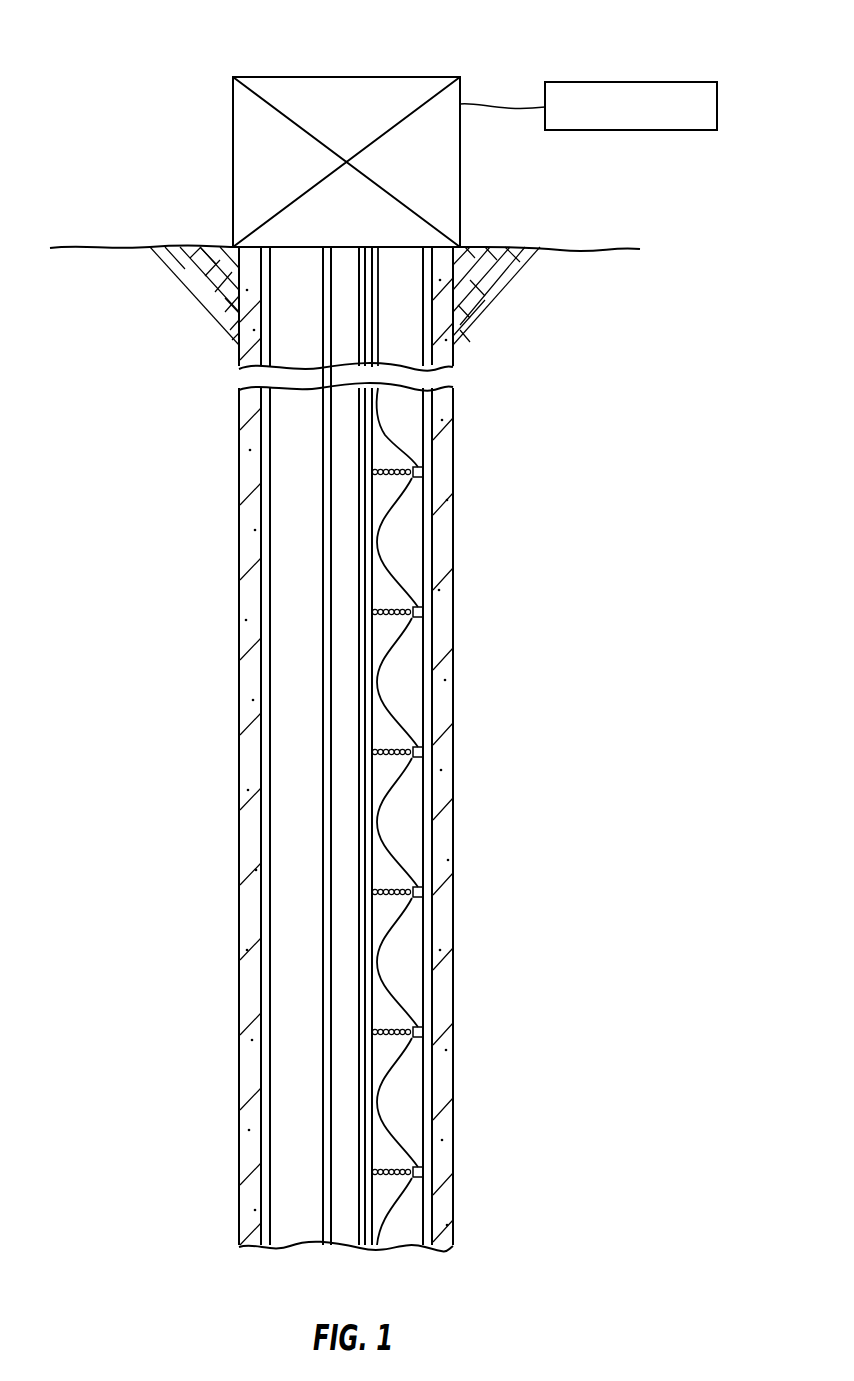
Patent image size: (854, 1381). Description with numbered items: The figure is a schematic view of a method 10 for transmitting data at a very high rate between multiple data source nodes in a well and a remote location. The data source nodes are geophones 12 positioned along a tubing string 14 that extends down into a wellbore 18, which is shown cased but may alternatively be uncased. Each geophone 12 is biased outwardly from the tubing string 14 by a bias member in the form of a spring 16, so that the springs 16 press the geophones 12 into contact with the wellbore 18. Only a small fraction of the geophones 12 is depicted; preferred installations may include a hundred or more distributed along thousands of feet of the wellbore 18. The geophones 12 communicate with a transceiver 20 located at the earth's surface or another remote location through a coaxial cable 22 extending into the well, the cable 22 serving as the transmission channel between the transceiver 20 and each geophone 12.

The method 10 is at (87, 157).
The geophone 12 is at (423, 472).
The tubing string 14 is at (321, 331).
The spring 16 is at (407, 482).
The wellbore 18 is at (272, 860).
The transceiver 20 is at (664, 82).
The coaxial cable 22 is at (378, 324).